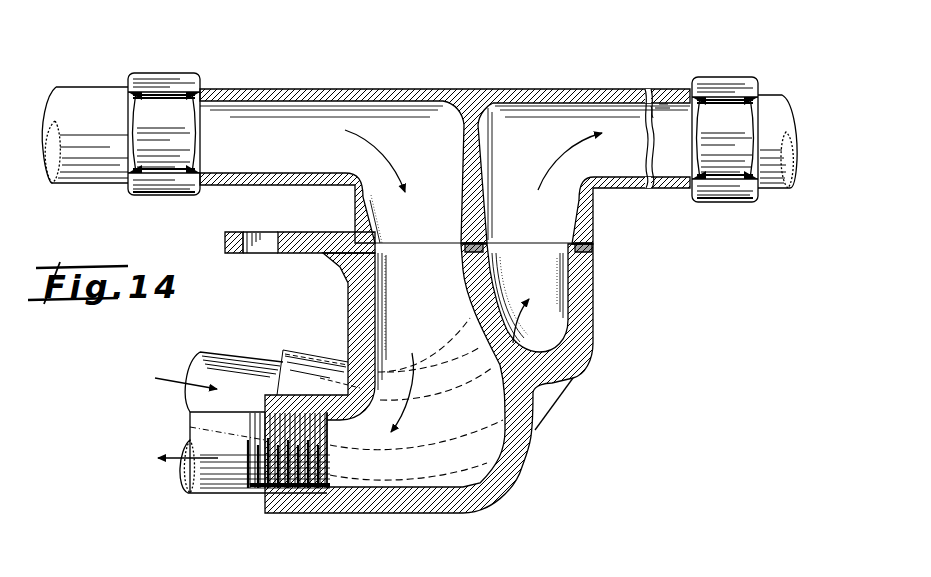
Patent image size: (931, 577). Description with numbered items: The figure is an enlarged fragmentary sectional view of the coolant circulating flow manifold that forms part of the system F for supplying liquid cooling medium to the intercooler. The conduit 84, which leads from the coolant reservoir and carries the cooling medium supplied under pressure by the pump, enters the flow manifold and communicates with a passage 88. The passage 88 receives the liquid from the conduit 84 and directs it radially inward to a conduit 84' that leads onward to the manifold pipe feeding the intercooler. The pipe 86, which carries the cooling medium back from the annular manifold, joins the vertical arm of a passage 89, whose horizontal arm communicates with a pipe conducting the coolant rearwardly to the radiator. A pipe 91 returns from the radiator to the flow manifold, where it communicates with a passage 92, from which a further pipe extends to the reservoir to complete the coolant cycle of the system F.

The conduit 84 is at (85, 111).
The passage 88 is at (275, 101).
The passage 92 is at (668, 107).
The pipe 91 is at (771, 106).
The pipe 86 is at (236, 363).
The conduit 84' is at (255, 473).
The passage 89 is at (571, 289).
The system for supplying the cooling medium F is at (558, 464).